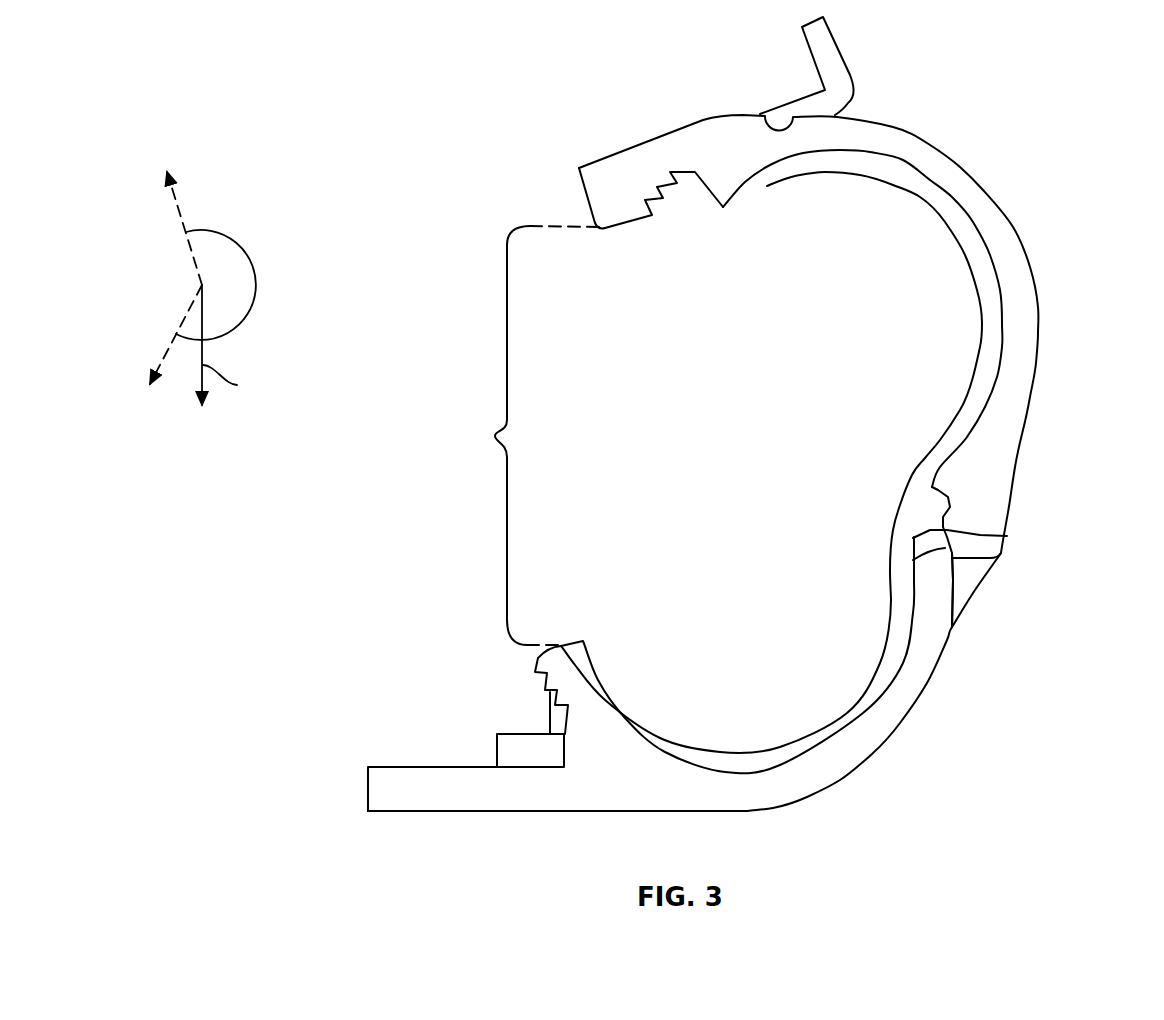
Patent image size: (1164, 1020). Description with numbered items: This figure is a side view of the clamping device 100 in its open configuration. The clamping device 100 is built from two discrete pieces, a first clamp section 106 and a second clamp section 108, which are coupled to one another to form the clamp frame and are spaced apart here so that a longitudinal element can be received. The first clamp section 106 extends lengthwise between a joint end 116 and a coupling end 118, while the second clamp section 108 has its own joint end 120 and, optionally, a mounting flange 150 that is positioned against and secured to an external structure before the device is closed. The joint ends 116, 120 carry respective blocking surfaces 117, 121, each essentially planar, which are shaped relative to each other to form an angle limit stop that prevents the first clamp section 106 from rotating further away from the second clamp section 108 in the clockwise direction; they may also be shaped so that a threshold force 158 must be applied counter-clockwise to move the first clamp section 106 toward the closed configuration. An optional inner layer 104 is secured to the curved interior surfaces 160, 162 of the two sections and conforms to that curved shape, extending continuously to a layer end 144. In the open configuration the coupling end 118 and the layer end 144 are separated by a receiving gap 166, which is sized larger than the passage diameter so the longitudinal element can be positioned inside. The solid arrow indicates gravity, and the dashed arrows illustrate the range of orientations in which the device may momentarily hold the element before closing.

The clamping device 100 is at (1064, 77).
The inner layer 104 is at (766, 187).
The first clamp section 106 is at (1031, 199).
The second clamp section 108 is at (911, 746).
The joint end 116 is at (982, 527).
The blocking surface 117 is at (1007, 536).
The coupling end 118 is at (571, 207).
The joint end 120 is at (933, 570).
The blocking surface 121 is at (913, 560).
The layer end 144 is at (577, 641).
The mounting flange 150 is at (402, 766).
The threshold force 158 is at (448, 165).
The interior surface 160 is at (928, 188).
The interior surface 162 is at (681, 763).
The receiving gap 166 is at (495, 436).